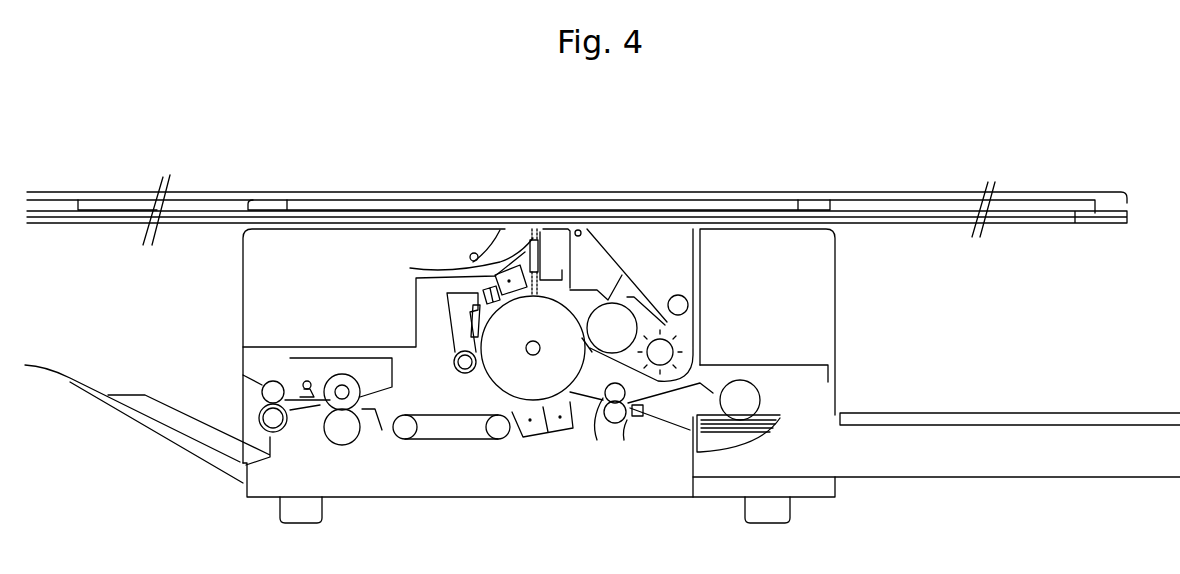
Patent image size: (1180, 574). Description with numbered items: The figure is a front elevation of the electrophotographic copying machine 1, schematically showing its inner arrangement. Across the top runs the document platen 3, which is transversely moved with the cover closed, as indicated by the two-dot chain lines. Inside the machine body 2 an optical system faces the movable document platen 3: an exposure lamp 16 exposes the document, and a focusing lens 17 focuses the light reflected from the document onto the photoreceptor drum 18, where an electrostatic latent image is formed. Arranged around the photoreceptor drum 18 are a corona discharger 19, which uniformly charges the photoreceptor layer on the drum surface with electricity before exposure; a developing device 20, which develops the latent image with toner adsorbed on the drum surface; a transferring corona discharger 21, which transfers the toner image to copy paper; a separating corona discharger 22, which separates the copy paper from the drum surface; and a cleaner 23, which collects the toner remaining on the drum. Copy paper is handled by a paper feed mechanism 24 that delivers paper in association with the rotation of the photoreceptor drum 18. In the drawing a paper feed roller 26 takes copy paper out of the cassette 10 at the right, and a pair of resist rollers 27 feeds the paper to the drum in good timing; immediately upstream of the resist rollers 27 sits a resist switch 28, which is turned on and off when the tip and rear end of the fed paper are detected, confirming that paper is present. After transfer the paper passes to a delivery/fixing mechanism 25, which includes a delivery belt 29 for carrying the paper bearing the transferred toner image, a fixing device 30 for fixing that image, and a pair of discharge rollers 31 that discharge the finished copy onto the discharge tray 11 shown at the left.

The electrophotographic copying machine 1 is at (385, 517).
The machine body 2 is at (835, 268).
The document platen 3 is at (641, 191).
The cassette 10 is at (923, 480).
The discharge tray 11 is at (150, 422).
The exposure lamp 16 is at (470, 255).
The focusing lens 17 is at (540, 250).
The photoreceptor drum 18 is at (492, 380).
The corona discharger 19 is at (458, 257).
The developing device 20 is at (596, 355).
The transferring corona discharger 21 is at (550, 437).
The separating corona discharger 22 is at (520, 438).
The cleaner 23 is at (450, 321).
The paper feed mechanism 24 is at (674, 436).
The delivery/fixing mechanism 25 is at (371, 451).
The paper feed roller 26 is at (760, 392).
The resist rollers 27 is at (597, 440).
The resist switch 28 is at (636, 420).
The delivery belt 29 is at (433, 440).
The fixing device 30 is at (320, 423).
The discharge rollers 31 is at (262, 392).